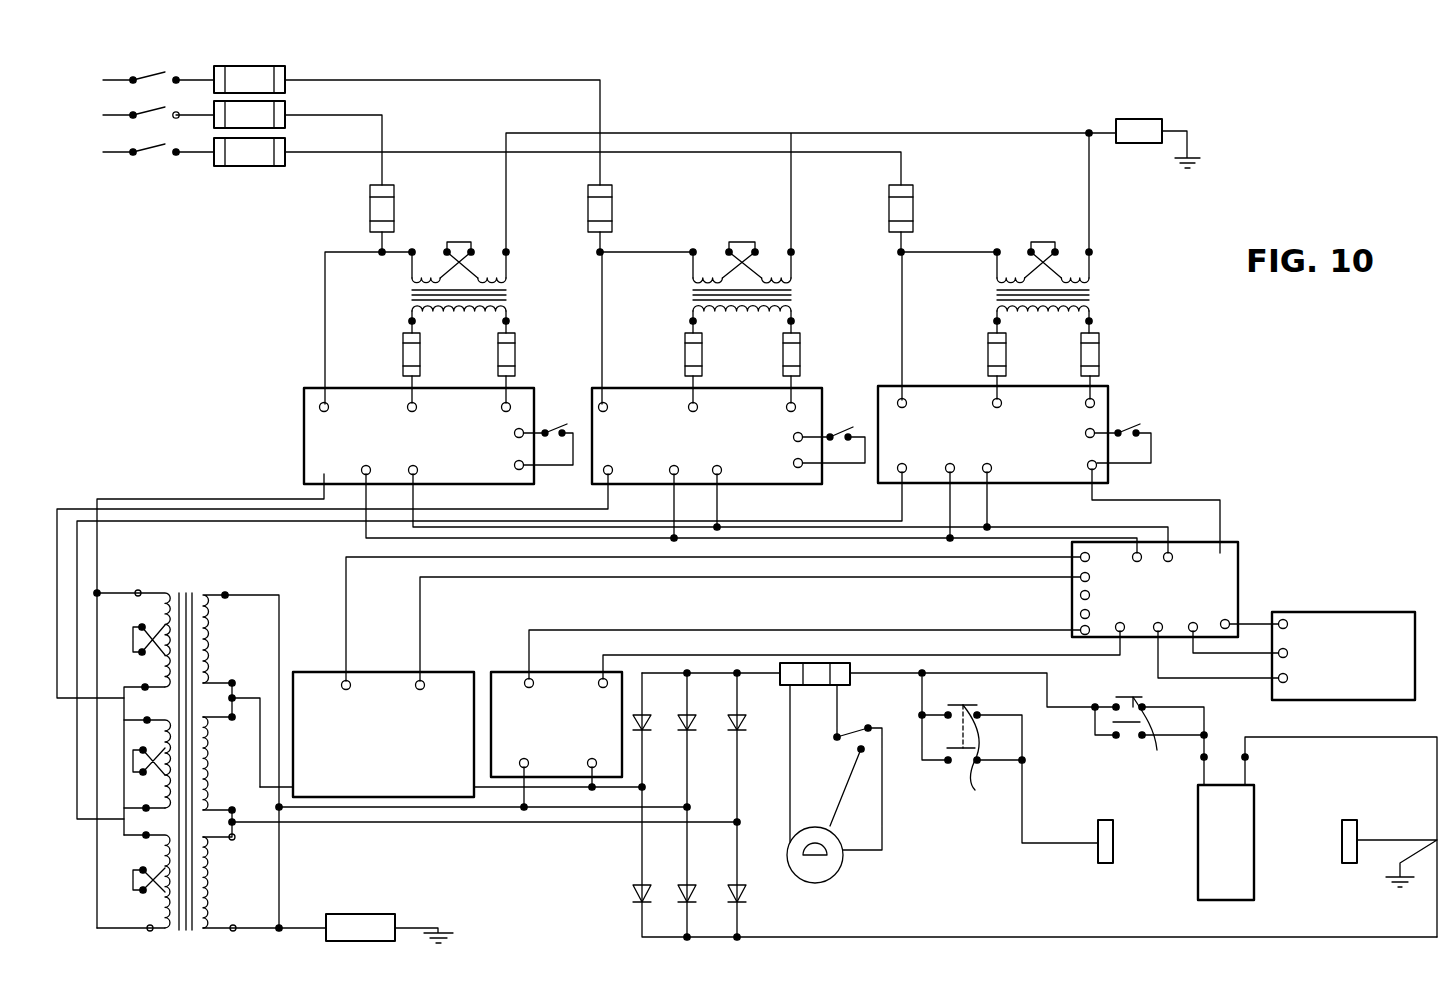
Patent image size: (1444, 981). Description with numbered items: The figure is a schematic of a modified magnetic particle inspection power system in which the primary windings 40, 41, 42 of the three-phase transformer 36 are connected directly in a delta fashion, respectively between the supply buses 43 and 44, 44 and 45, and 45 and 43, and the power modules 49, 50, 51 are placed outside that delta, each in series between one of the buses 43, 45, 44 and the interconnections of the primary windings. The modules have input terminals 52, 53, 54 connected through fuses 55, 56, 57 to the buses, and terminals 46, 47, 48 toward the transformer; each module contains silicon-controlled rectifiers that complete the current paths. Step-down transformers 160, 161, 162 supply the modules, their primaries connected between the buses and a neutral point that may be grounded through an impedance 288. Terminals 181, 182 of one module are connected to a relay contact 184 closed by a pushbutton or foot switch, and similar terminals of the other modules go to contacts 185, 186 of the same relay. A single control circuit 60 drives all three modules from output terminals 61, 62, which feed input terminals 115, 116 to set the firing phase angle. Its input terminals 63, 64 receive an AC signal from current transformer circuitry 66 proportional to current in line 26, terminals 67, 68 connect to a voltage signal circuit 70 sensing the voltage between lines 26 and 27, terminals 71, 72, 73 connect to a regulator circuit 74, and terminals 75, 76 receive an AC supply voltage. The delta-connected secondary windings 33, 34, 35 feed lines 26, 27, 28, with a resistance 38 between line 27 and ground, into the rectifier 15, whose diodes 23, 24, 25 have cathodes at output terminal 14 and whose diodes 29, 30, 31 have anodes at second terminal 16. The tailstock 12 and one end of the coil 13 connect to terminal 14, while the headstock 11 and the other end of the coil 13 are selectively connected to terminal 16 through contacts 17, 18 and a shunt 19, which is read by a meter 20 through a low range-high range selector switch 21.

The three-phase power input bus 43 is at (398, 80).
The three-phase power input bus 44 is at (367, 115).
The three-phase power input bus 45 is at (398, 151).
The impedance 288 is at (1140, 122).
The fuse 57 is at (388, 213).
The fuse 55 is at (608, 213).
The fuse 56 is at (910, 213).
The step-down transformer 162 is at (512, 300).
The step-down transformer 160 is at (798, 294).
The step-down transformer 161 is at (1102, 291).
The power module 51 is at (303, 388).
The power module 49 is at (592, 388).
The power module 50 is at (890, 386).
The input terminal 54 is at (330, 403).
The input terminal 52 is at (607, 403).
The input terminal 53 is at (906, 399).
The relay contact 186 is at (547, 430).
The terminal 182 is at (805, 433).
The relay contact 184 is at (848, 445).
The relay contact 185 is at (1121, 432).
The terminal 181 is at (800, 469).
The power module terminal 48 is at (319, 470).
The power module terminal 46 is at (610, 476).
The power module terminal 47 is at (903, 474).
The input terminal 116 is at (676, 476).
The input terminal 115 is at (719, 476).
The control circuit 60 is at (1232, 573).
The input terminal 64 is at (1082, 553).
The output terminal 62 is at (1134, 553).
The output terminal 61 is at (1172, 552).
The input terminal 63 is at (1080, 594).
The terminal 75 is at (1080, 614).
The terminal 76 is at (1080, 630).
The terminal 67 is at (1085, 640).
The terminal 68 is at (1123, 633).
The terminal 73 is at (1160, 633).
The terminal 72 is at (1195, 633).
The terminal 71 is at (1229, 620).
The regulator circuit 74 is at (1372, 612).
The current transformer circuitry 66 is at (442, 672).
The voltage signal circuit 70 is at (553, 678).
The line 26 is at (570, 789).
The line 27 is at (543, 809).
The line 28 is at (450, 824).
The rectifier 15 is at (1011, 806).
The diode 29 is at (643, 716).
The diode 30 is at (688, 716).
The diode 31 is at (743, 718).
The diode 23 is at (642, 885).
The diode 24 is at (686, 884).
The diode 25 is at (753, 858).
The output terminal 14 is at (740, 938).
The second terminal 16 is at (738, 673).
The shunt 19 is at (810, 686).
The low range-high range selector switch 21 is at (877, 738).
The meter 20 is at (833, 873).
The contact 17 is at (1008, 760).
The headstock 11 is at (1098, 852).
The contact 18 is at (1151, 741).
The coil 13 is at (1243, 803).
The tailstock 12 is at (1360, 832).
The three-phase transformer 36 is at (183, 590).
The primary winding 41 is at (158, 647).
The primary winding 40 is at (165, 742).
The primary winding 42 is at (167, 903).
The secondary winding 34 is at (208, 640).
The secondary winding 33 is at (208, 765).
The secondary winding 35 is at (212, 878).
The resistance 38 is at (372, 920).